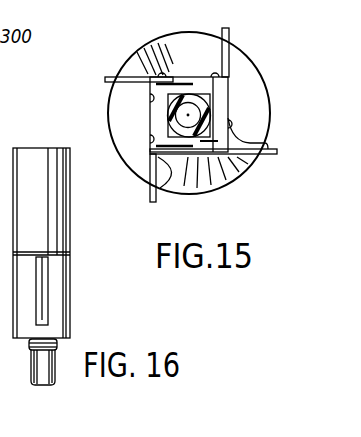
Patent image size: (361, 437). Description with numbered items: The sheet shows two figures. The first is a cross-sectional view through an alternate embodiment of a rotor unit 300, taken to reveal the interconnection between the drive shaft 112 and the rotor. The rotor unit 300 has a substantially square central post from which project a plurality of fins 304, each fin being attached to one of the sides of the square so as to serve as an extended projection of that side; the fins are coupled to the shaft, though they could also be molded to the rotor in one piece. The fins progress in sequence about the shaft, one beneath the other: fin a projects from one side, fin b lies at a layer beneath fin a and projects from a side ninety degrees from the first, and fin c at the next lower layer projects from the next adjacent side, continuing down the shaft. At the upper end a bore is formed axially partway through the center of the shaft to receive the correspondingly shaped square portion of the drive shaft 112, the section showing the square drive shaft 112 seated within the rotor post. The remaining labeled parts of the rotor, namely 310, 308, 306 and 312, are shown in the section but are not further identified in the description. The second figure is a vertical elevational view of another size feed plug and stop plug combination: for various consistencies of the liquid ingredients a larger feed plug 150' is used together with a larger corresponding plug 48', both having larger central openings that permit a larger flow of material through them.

In FIG. 15, the rotor unit 300 is at (274, 60).
In FIG. 15, the drive shaft 112 is at (212, 98).
In FIG. 15, the shaft 310 is at (212, 118).
In FIG. 15, the fins 304 is at (277, 153).
In FIG. 15, the body 308 is at (131, 158).
In FIG. 15, the arm 306 is at (178, 165).
In FIG. 15, the hatched region 312 is at (204, 191).
In FIG. 15, the fin A a is at (262, 156).
In FIG. 15, the fin B b is at (229, 30).
In FIG. 15, the fin C c is at (107, 77).
In FIG. 16, the larger plug 48' is at (41, 219).
In FIG. 16, the larger feed plug 150' is at (78, 291).